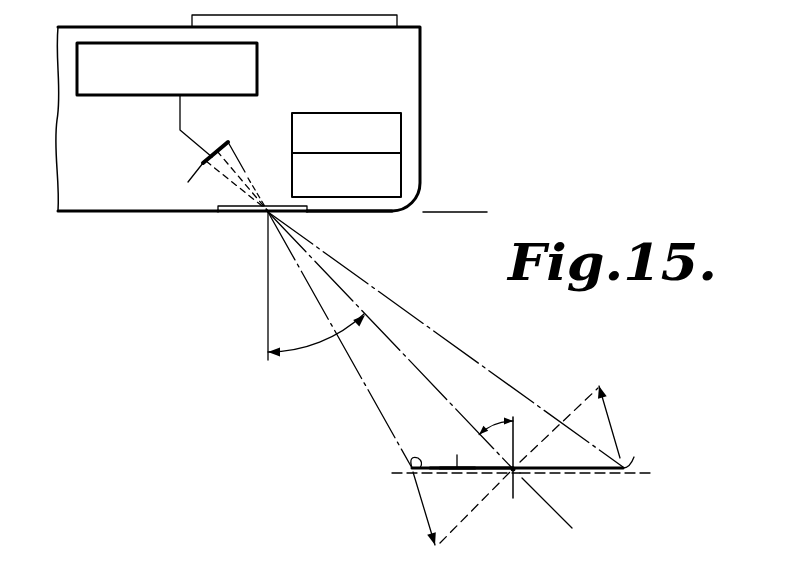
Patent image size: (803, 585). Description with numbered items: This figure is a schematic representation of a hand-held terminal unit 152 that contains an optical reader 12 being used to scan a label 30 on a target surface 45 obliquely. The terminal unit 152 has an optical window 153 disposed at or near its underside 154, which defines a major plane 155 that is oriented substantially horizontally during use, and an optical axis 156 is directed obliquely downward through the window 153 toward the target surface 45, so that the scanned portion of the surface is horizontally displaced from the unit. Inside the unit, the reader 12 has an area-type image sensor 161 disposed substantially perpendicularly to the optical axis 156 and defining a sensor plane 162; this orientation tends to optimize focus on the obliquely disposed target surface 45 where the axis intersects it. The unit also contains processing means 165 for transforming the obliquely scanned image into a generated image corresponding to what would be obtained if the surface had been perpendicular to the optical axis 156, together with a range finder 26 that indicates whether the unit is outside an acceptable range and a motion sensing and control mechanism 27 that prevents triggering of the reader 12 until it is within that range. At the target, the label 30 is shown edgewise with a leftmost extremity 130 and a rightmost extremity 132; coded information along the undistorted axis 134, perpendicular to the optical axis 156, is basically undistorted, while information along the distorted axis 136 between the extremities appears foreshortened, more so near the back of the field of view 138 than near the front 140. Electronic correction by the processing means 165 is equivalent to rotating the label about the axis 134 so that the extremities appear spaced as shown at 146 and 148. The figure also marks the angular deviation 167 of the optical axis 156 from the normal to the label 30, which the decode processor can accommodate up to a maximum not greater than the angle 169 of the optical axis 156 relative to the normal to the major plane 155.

The optical reader 12 is at (270, 106).
The range finder 26 is at (401, 170).
The motion sensing and control mechanism 27 is at (401, 131).
The label 30 is at (591, 470).
The target surface 45 is at (456, 453).
The leftmost extremity 130 is at (408, 460).
The rightmost extremity 132 is at (649, 454).
The undistorted axis 134 is at (509, 470).
The distorted axis 136 is at (471, 470).
The back of field of view 138 is at (386, 481).
The front of field of view 140 is at (640, 486).
The corrected extremity position 146 is at (446, 547).
The corrected extremity position 148 is at (598, 382).
The hand-held terminal unit 152 is at (422, 80).
The optical window 153 is at (237, 215).
The underside 154 is at (355, 214).
The major plane 155 is at (468, 213).
The optical axis 156 is at (447, 401).
The area-type image sensor 161 is at (222, 143).
The sensor plane 162 is at (233, 128).
The processing means 165 is at (118, 96).
The angular deviation 167 is at (495, 423).
The angle 169 is at (318, 345).